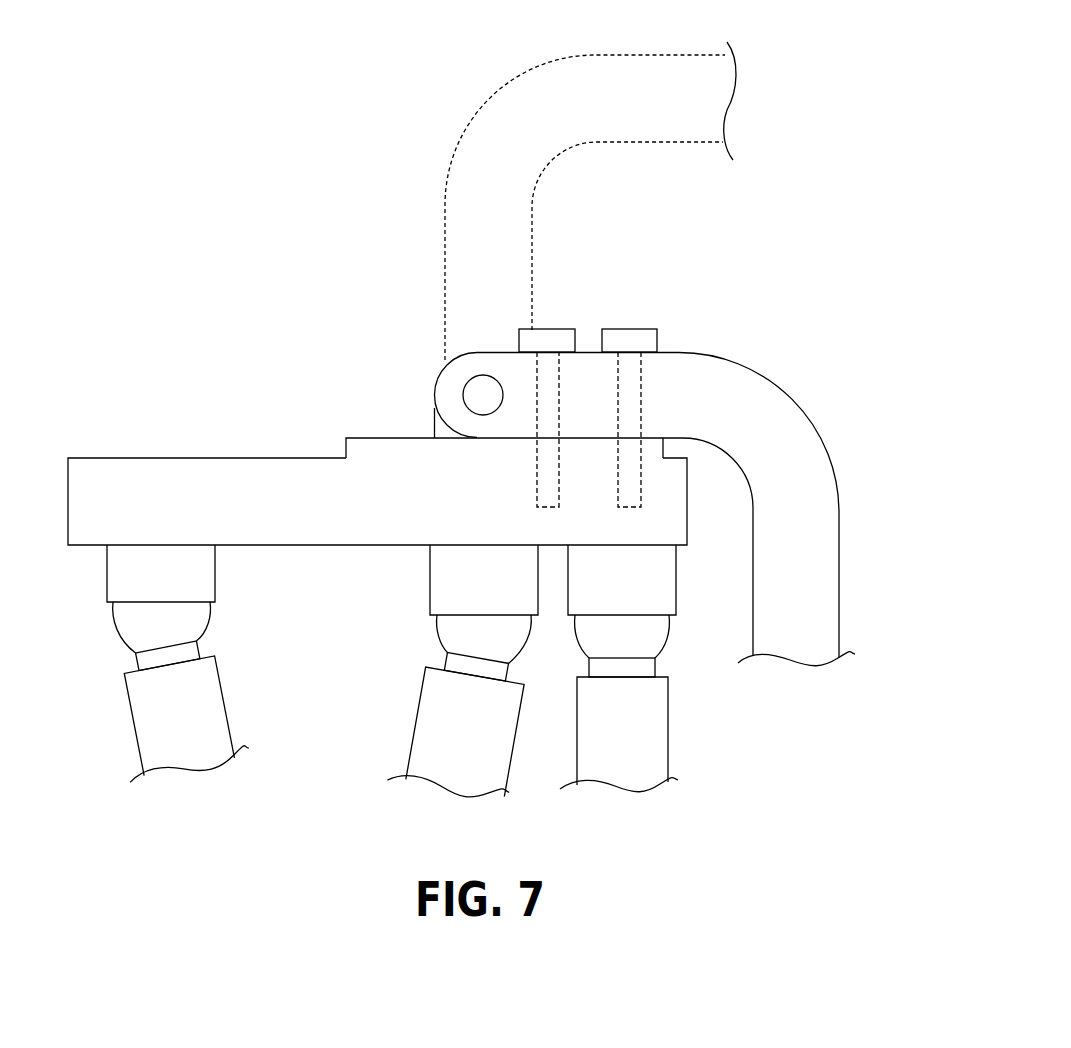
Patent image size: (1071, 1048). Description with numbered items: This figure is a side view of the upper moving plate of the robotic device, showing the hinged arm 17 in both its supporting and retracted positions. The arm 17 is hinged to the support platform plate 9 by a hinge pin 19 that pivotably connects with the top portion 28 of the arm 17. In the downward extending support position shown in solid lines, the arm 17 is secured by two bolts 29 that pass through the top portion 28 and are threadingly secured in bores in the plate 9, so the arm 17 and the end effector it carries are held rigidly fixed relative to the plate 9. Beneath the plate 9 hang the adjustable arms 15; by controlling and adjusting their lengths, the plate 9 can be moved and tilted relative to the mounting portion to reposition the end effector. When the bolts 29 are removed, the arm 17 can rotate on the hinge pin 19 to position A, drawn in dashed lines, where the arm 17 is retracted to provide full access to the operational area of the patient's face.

The position A is at (473, 130).
The support platform plate 9 is at (277, 493).
The arms 15 is at (210, 717).
The arm 17 is at (737, 430).
The hinge pin 19 is at (482, 395).
The top portion 28 is at (663, 378).
The bolts 29 is at (560, 330).